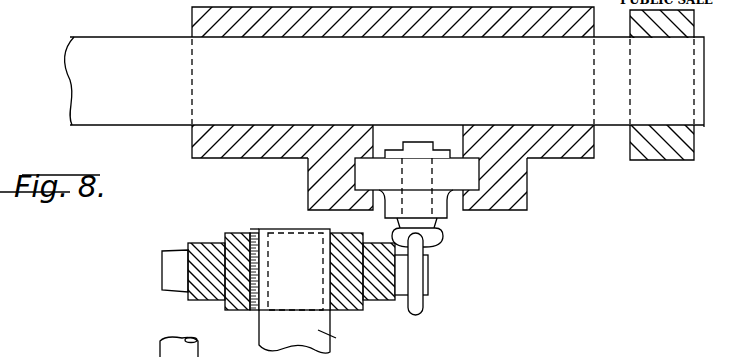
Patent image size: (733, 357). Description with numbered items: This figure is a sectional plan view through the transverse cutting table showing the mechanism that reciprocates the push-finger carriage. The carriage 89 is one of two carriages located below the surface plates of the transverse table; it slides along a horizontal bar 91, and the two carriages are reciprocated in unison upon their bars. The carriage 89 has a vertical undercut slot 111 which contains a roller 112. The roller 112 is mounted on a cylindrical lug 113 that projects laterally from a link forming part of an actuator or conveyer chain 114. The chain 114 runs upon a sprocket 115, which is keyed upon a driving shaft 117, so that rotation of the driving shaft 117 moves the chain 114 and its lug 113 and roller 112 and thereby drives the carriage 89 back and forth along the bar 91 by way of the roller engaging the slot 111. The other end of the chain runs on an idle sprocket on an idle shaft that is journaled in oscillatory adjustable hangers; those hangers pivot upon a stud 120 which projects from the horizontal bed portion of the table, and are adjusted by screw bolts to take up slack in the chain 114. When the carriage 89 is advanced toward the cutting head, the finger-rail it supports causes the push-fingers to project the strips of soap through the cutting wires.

The carriage 89 is at (193, 21).
The horizontal bar 91 is at (72, 108).
The vertical undercut slot 111 is at (456, 200).
The roller 112 is at (360, 172).
The cylindrical lug 113 is at (416, 142).
The conveyer chain 114 is at (424, 313).
The sprocket 115 is at (210, 242).
The driving shaft 117 is at (298, 230).
The stud 120 is at (326, 347).